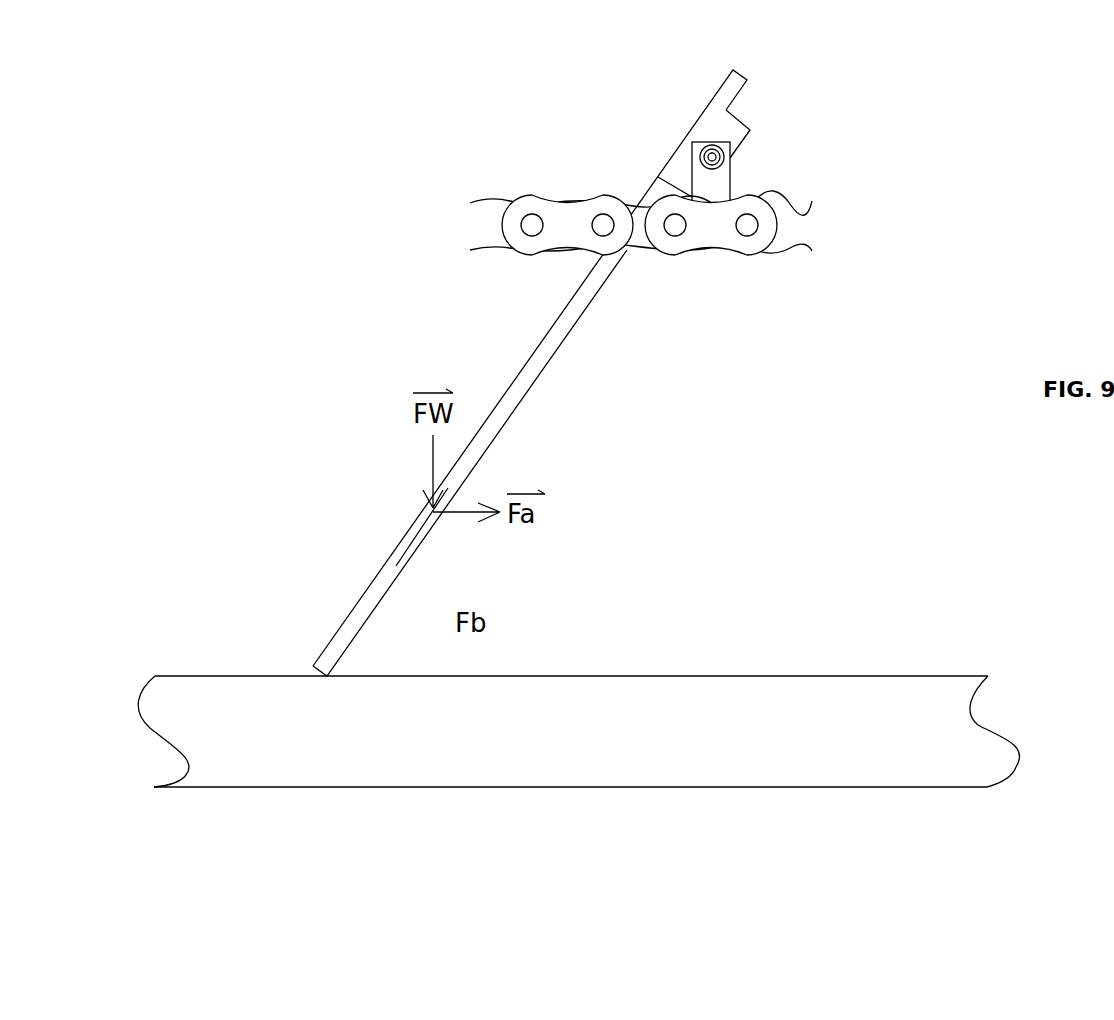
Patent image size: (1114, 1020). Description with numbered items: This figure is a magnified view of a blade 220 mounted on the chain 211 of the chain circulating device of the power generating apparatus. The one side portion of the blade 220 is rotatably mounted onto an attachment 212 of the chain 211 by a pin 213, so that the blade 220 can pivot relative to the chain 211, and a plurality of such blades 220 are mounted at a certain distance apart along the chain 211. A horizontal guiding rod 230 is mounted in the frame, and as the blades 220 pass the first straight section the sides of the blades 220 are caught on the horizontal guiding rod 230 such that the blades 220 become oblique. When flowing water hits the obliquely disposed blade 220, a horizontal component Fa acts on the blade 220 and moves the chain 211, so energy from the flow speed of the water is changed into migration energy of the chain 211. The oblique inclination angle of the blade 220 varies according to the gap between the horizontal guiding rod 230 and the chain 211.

The chain 211 is at (733, 253).
The attachment 212 is at (730, 183).
The pin 213 is at (733, 157).
The blade 220 is at (517, 405).
The horizontal guiding rod 230 is at (693, 787).